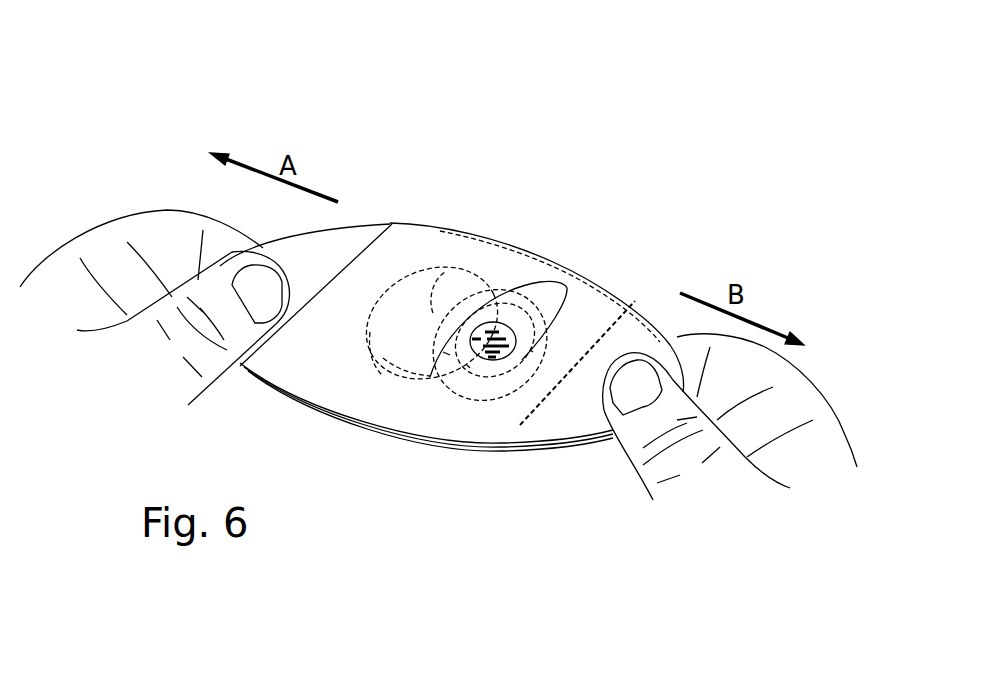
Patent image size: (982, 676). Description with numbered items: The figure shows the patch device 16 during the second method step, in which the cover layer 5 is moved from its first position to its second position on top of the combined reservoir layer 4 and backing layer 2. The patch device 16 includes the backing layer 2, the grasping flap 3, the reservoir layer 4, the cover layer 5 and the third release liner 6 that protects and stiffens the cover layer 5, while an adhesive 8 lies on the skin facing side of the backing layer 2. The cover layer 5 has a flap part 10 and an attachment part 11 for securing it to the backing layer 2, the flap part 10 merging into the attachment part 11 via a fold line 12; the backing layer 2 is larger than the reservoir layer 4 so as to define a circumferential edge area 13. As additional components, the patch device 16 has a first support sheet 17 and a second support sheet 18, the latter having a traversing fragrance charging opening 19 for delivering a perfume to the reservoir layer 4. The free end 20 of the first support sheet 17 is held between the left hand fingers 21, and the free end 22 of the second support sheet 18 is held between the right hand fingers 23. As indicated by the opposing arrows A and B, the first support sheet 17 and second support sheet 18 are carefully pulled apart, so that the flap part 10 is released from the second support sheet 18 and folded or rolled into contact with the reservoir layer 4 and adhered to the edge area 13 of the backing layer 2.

The backing layer 2 is at (478, 392).
The grasping flap 3 is at (562, 292).
The reservoir layer 4 is at (468, 365).
The cover layer 5 is at (433, 313).
The third release liner 6 is at (368, 326).
The adhesive 8 is at (515, 371).
The flap part 10 is at (383, 356).
The attachment part 11 is at (443, 352).
The fold line 12 is at (470, 338).
The circumferential edge area 13 is at (530, 348).
The patch device 16 is at (568, 142).
The first support sheet 17 is at (349, 233).
The second support sheet 18 is at (390, 407).
The fragrance charging opening 19 is at (500, 334).
The free end 20 is at (298, 252).
The left hand fingers 21 is at (108, 237).
The free end 22 is at (537, 438).
The right hand fingers 23 is at (797, 403).